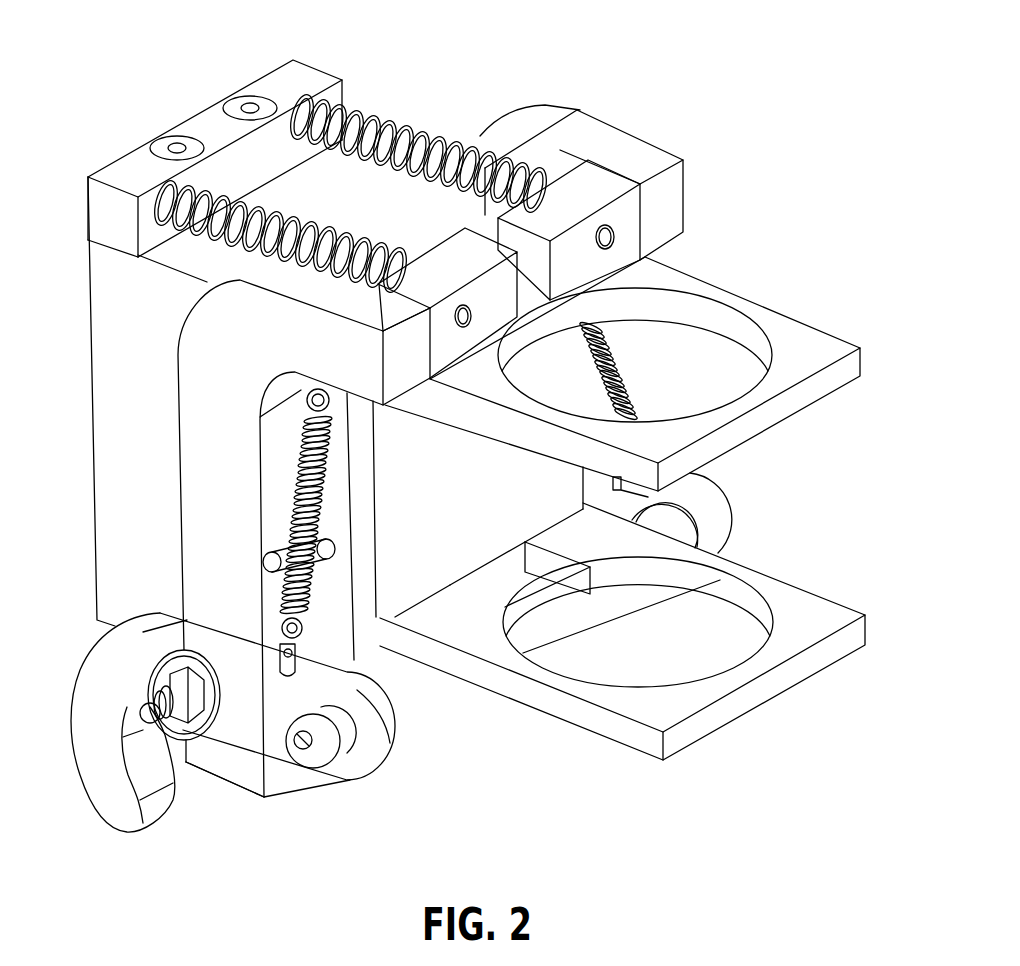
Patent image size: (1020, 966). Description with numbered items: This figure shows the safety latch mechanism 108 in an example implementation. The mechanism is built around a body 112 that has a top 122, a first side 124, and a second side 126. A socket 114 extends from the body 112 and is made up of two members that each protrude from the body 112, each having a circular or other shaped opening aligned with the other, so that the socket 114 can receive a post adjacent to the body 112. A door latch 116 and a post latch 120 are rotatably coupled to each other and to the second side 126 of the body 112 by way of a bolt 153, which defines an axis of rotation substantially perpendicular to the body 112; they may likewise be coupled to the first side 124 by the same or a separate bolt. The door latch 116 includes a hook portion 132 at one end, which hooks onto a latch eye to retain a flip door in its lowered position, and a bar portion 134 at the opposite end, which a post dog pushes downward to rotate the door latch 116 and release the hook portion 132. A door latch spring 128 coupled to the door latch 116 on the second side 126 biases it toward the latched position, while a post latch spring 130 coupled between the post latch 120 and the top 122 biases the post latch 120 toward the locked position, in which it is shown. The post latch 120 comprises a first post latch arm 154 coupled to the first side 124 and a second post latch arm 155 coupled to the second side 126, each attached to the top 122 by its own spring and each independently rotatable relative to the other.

The safety latch mechanism 108 is at (793, 134).
The body 112 is at (118, 553).
The socket 114 is at (820, 347).
The door latch 116 is at (392, 748).
The post latch 120 is at (463, 252).
The top 122 is at (298, 205).
The first side 124 is at (105, 303).
The second side 126 is at (440, 142).
The door latch spring 128 is at (290, 498).
The post latch spring 130 is at (445, 150).
The hook portion 132 is at (105, 792).
The bar portion 134 is at (412, 693).
The bolt 153 is at (307, 757).
The first post latch arm 154 is at (198, 405).
The second post latch arm 155 is at (653, 165).